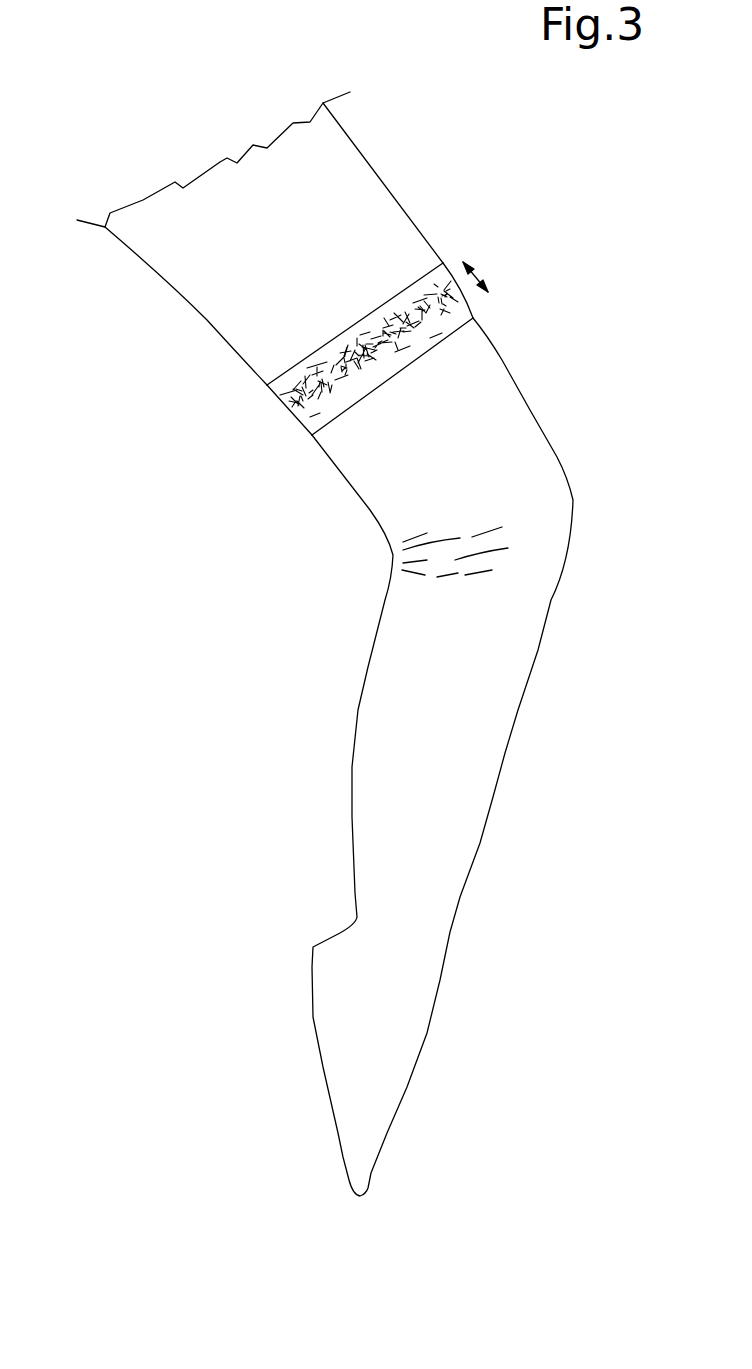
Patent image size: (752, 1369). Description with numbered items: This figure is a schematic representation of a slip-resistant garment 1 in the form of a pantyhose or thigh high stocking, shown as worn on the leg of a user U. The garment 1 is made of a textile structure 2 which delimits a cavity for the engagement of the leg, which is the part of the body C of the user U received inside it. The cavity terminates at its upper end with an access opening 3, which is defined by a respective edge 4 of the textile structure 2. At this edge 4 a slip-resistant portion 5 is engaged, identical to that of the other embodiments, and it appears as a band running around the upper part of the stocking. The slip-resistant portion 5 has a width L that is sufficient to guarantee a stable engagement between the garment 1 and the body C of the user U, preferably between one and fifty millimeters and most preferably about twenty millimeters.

The slip-resistant garment 1 is at (582, 313).
The textile structure 2 is at (560, 453).
The access opening 3 is at (304, 341).
The edge 4 is at (410, 290).
The slip-resistant portion 5 is at (320, 433).
The body C is at (345, 182).
The user U is at (402, 196).
The width L is at (480, 280).